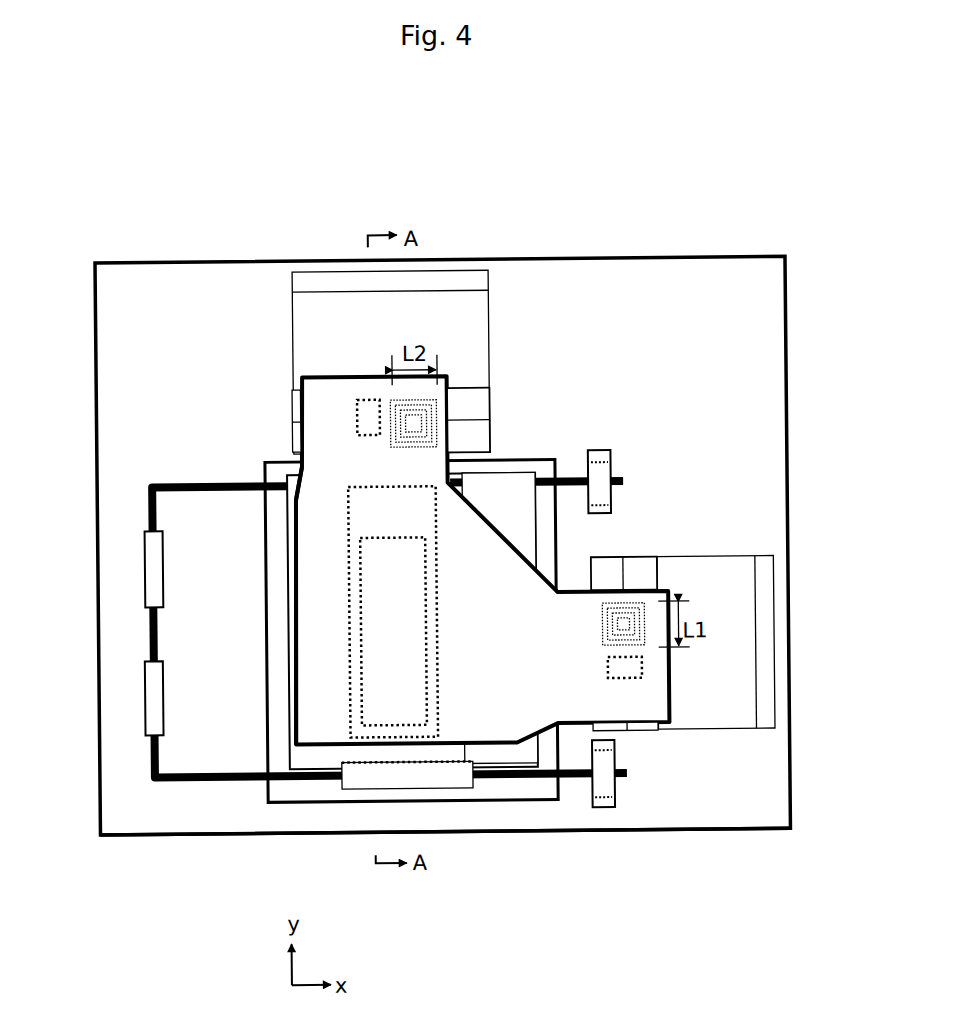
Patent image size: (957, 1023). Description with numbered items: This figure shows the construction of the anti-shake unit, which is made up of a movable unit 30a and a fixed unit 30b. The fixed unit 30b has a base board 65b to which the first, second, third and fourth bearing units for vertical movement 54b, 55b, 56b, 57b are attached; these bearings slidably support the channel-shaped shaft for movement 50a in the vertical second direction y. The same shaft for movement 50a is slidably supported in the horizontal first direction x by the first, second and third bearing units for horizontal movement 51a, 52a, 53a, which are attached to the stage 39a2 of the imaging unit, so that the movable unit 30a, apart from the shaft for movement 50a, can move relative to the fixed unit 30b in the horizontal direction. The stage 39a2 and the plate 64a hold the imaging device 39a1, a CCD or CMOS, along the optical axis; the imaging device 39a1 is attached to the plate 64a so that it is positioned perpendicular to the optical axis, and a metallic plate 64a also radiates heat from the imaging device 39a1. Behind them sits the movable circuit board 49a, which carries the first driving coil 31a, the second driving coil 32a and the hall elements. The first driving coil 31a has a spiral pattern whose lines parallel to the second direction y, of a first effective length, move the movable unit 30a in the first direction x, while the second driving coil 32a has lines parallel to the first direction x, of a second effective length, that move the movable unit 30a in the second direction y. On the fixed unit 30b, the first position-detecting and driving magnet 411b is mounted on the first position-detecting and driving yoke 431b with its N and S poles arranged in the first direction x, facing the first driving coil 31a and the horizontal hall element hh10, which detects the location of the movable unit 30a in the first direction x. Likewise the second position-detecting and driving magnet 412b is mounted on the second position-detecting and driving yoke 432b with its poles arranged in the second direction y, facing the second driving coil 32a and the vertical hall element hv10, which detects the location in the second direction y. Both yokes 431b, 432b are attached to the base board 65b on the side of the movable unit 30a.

The base board 65b is at (785, 264).
The second position-detecting and driving yoke 432b is at (491, 331).
The second position-detecting and driving magnet 412b is at (491, 404).
The first bearing unit for horizontal movement 51a is at (511, 476).
The vertical hall element hv10 is at (358, 440).
The second driving coil 32a is at (421, 448).
The second bearing unit for horizontal movement 52a is at (296, 469).
The first bearing unit for vertical movement 54b is at (603, 455).
The shaft for movement 50a is at (621, 487).
The third bearing unit for vertical movement 56b is at (142, 530).
The stage 39a2 is at (292, 542).
The movable circuit board 49a is at (287, 594).
The fourth bearing unit for vertical movement 57b is at (141, 660).
The imaging device 39a1 is at (424, 598).
The first position-detecting and driving magnet 411b is at (615, 562).
The first position-detecting and driving yoke 431b is at (687, 563).
The first driving coil 31a is at (597, 630).
The plate 64a is at (433, 681).
The horizontal hall element hh10 is at (618, 683).
The second bearing unit for vertical movement 55b is at (610, 792).
The third bearing unit for horizontal movement 53a is at (447, 791).
The movable unit 30a is at (514, 730).
The fixed unit 30b is at (643, 860).